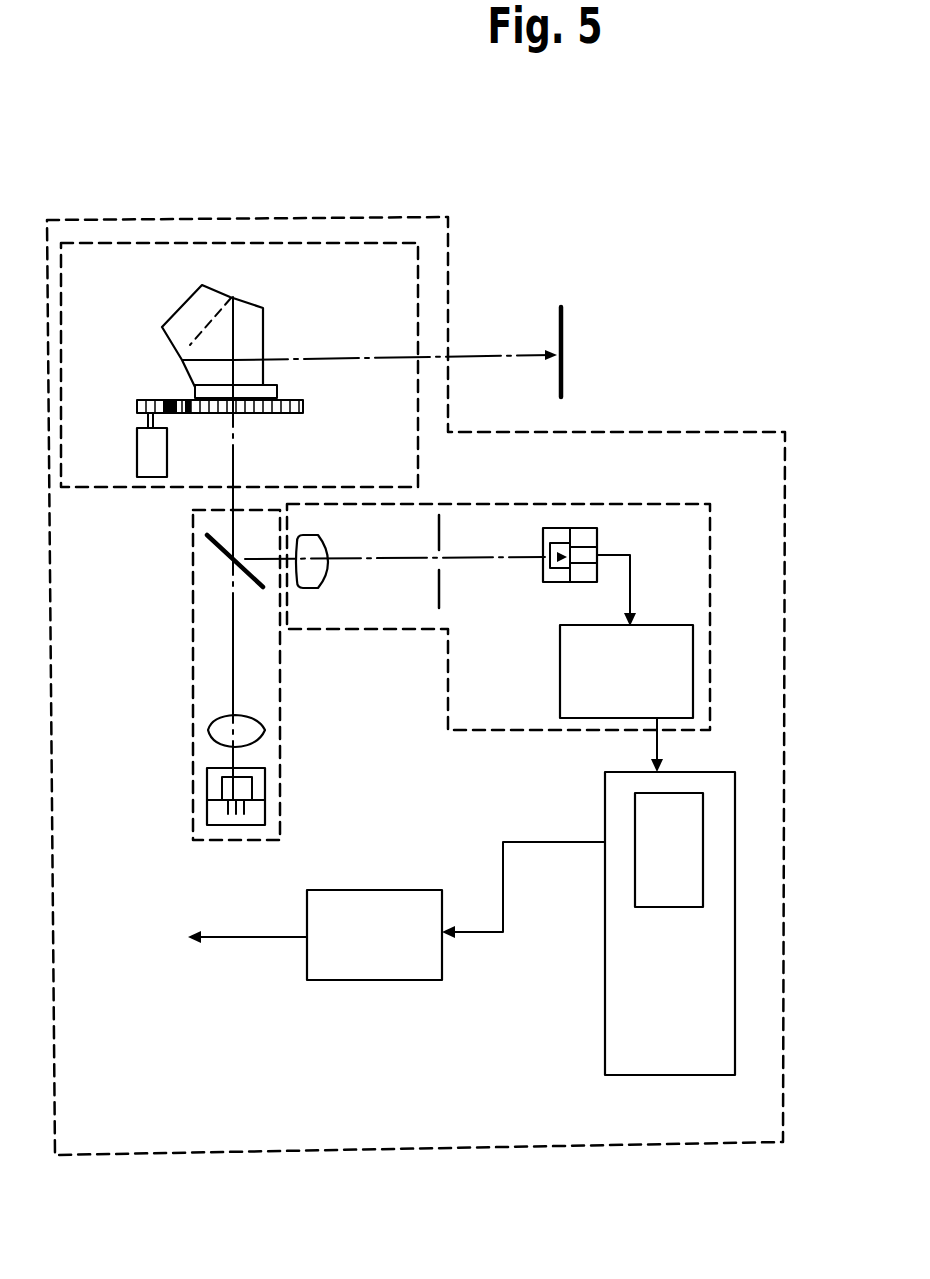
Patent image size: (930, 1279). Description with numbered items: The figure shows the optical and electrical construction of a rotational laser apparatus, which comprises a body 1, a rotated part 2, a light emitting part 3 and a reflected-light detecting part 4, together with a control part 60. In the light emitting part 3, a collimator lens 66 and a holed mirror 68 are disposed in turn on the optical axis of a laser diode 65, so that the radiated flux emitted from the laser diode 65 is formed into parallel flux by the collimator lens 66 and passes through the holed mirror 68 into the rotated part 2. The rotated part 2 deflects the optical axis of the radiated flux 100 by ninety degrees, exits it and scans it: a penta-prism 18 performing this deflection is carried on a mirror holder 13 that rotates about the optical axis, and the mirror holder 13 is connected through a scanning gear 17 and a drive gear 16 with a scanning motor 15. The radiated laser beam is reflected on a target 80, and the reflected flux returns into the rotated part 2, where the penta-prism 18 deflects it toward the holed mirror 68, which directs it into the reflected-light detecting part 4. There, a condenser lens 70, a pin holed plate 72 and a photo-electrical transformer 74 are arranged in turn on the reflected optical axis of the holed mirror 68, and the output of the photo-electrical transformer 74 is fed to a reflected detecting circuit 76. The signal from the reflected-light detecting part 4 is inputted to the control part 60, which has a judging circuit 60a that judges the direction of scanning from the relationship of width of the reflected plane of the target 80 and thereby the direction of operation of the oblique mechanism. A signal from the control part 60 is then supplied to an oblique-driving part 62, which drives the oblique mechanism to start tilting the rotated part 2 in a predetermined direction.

The body 1 is at (450, 255).
The rotated part 2 is at (290, 245).
The light emitting part 3 is at (193, 742).
The reflected-light detecting part 4 is at (615, 495).
The mirror holder 13 is at (195, 390).
The scanning motor 15 is at (145, 447).
The drive gear 16 is at (148, 400).
The scanning gear 17 is at (305, 405).
The penta-prism 18 is at (183, 303).
The control part 60 is at (605, 800).
The judging circuit 60a is at (635, 882).
The oblique-driving part 62 is at (362, 980).
The laser diode 65 is at (207, 818).
The collimator lens 66 is at (253, 712).
The holed mirror 68 is at (215, 555).
The condenser lens 70 is at (328, 548).
The pin holed plate 72 is at (442, 530).
The photo-electrical transformer 74 is at (600, 535).
The reflected detecting circuit 76 is at (662, 625).
The target 80 is at (563, 330).
The radiated flux 100 is at (505, 350).